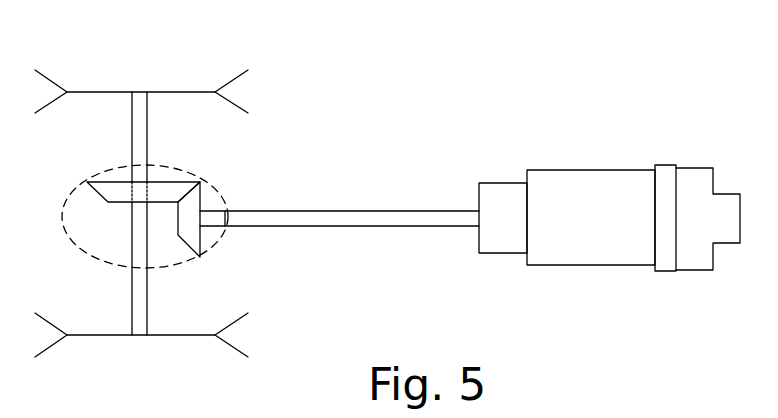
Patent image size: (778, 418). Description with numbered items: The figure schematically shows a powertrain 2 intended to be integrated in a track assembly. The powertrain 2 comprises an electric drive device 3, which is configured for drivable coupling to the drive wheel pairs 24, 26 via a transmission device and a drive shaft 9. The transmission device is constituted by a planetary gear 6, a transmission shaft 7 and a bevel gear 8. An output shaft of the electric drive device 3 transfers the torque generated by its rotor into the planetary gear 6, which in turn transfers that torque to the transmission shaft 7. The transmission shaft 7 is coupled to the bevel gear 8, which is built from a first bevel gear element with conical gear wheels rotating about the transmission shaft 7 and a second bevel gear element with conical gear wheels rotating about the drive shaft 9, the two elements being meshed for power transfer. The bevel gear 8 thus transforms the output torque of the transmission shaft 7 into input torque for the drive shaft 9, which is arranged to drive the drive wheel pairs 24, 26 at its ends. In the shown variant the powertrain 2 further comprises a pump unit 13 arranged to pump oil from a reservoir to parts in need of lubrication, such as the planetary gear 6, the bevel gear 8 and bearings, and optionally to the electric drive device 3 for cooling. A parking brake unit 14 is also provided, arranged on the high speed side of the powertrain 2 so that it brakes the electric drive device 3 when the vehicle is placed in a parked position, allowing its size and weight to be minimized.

The powertrain 2 is at (429, 138).
The electric drive device 3 is at (605, 265).
The planetary gear 6 is at (507, 253).
The transmission shaft 7 is at (287, 211).
The bevel gear 8 is at (176, 186).
The drive shaft 9 is at (147, 300).
The pump unit 13 is at (667, 271).
The parking brake unit 14 is at (733, 243).
The drive wheel pair 24 is at (102, 335).
The drive wheel pair 26 is at (102, 92).